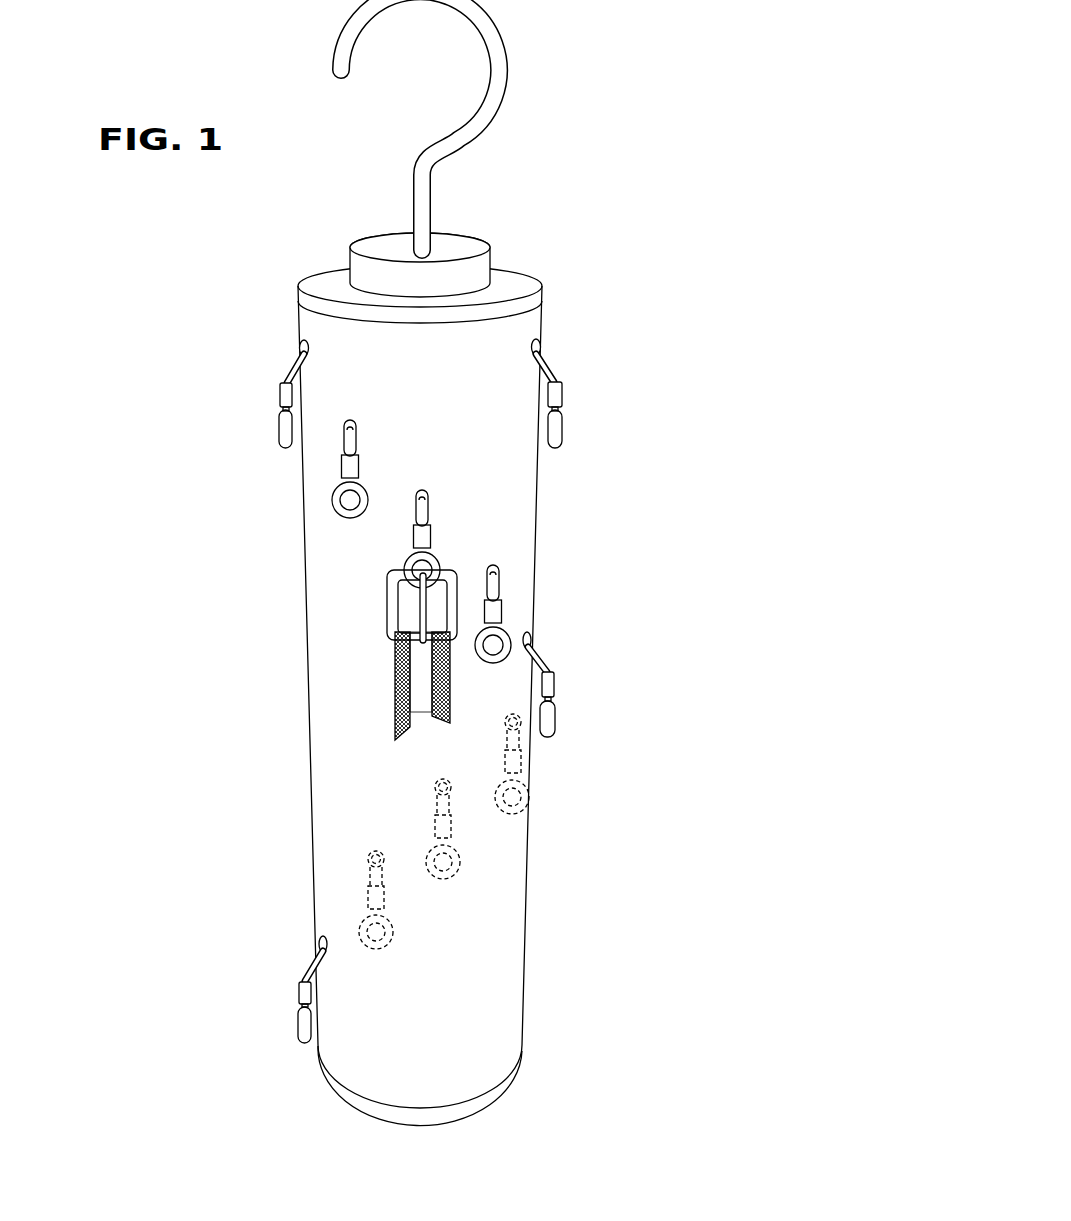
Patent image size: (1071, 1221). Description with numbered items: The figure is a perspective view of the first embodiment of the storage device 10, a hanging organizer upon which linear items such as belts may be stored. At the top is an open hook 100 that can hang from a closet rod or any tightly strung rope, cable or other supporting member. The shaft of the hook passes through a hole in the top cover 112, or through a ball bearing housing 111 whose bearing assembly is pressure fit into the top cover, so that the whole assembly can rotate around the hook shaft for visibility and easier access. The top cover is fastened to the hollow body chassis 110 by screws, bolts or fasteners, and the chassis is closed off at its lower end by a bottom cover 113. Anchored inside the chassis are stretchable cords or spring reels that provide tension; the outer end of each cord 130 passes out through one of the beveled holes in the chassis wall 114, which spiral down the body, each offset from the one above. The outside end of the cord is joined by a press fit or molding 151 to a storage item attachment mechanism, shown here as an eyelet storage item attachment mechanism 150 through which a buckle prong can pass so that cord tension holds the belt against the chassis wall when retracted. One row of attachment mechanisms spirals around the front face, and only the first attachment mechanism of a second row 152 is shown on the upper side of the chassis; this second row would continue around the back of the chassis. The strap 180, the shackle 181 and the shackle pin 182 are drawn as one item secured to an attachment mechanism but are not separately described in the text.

The storage device 10 is at (100, 882).
The open hook 100 is at (497, 68).
The hollow body chassis 110 is at (507, 910).
The ball bearing housing 111 is at (460, 273).
The top cover 112 is at (422, 316).
The bottom cover 113 is at (428, 1117).
The beveled holes in the chassis wall 114 is at (303, 347).
The cord 130 is at (287, 370).
The eyelet storage item attachment mechanism 150 is at (510, 630).
The press fit or molding 151 is at (279, 398).
The second row of attachment mechanisms 152 is at (556, 352).
The strap 180 is at (398, 662).
The shackle 181 is at (385, 630).
The shackle pin 182 is at (413, 607).